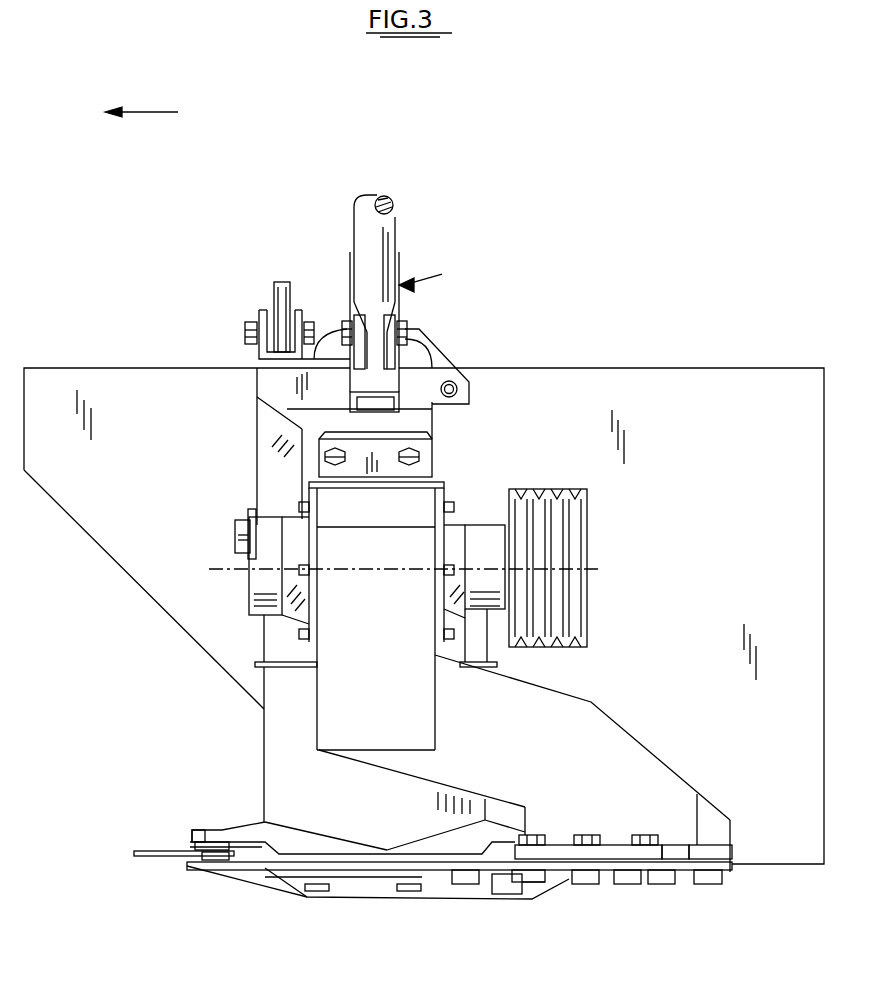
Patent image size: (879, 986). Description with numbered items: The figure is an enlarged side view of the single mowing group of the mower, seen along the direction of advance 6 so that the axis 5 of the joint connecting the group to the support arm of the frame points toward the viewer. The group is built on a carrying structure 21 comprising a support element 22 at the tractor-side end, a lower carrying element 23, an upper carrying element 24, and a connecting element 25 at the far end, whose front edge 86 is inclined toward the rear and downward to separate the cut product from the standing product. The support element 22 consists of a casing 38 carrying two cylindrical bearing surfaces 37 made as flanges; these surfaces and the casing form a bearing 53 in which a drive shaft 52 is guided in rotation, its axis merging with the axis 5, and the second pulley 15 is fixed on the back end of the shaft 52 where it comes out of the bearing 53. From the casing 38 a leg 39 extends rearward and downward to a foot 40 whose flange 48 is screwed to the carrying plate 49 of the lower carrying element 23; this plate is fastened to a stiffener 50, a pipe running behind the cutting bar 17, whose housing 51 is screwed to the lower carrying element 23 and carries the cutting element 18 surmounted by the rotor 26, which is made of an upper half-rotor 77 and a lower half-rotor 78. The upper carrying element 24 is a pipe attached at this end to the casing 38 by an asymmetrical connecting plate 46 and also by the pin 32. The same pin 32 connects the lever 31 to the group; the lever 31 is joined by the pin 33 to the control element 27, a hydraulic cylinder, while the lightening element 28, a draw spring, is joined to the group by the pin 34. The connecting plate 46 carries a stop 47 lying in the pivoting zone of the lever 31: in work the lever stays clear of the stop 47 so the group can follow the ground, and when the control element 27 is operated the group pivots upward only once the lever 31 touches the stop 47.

The axis 5 is at (598, 567).
The direction of advance 6 is at (152, 110).
The second pulley 15 is at (585, 520).
The cutting bar 17 is at (220, 822).
The cutting element 18 is at (270, 830).
The carrying structure 21 is at (440, 272).
The support element 22 is at (388, 770).
The lower carrying element 23 is at (733, 870).
The upper carrying element 24 is at (399, 275).
The connecting element 25 is at (613, 372).
The rotor 26 is at (262, 722).
The control element 27 is at (280, 282).
The lightening element 28 is at (362, 222).
The lever 31 is at (262, 315).
The pin 32 is at (238, 530).
The pin 33 is at (243, 332).
The pin 34 is at (405, 327).
The cylindrical bearing surfaces 37 is at (490, 530).
The casing 38 is at (378, 636).
The leg 39 is at (607, 717).
The foot 40 is at (715, 820).
The connecting plate 46 is at (410, 416).
The stop 47 is at (270, 385).
The flange 48 is at (606, 845).
The carrying plate 49 is at (607, 872).
The stiffener 50 is at (508, 887).
The housing 51 is at (365, 884).
The shaft 52 is at (503, 585).
The bearing 53 is at (452, 492).
The upper half-rotor 77 is at (276, 631).
The lower half-rotor 78 is at (282, 755).
The front edge 86 is at (90, 530).